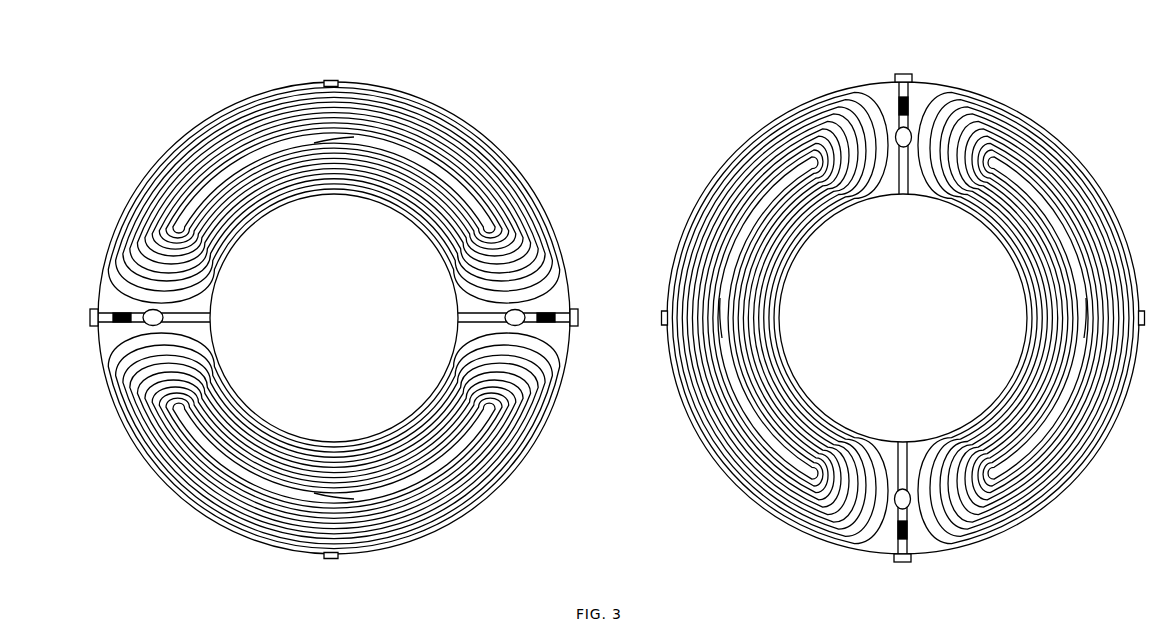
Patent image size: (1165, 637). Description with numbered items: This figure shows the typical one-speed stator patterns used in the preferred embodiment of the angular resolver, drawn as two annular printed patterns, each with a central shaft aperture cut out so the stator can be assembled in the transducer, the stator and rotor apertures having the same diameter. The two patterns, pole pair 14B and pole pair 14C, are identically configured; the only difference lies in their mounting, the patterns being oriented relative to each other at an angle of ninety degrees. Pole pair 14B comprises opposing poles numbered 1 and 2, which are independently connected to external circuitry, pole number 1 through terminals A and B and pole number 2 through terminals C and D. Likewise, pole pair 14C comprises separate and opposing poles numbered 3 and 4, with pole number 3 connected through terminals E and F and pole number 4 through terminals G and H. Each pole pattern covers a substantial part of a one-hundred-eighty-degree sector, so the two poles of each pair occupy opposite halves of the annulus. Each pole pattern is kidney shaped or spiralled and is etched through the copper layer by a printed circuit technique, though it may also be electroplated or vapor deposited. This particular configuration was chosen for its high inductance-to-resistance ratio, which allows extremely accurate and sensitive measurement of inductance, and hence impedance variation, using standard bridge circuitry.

The pole pair 14B is at (382, 40).
The pole pair 14C is at (952, 40).
The pole number 1 is at (333, 195).
The pole number 2 is at (333, 446).
The pole number 3 is at (778, 317).
The pole number 4 is at (1026, 325).
The terminal A is at (378, 112).
The terminal B is at (354, 73).
The terminal C is at (252, 518).
The terminal D is at (308, 568).
The terminal E is at (683, 366).
The terminal F is at (649, 329).
The terminal G is at (1119, 288).
The terminal H is at (1148, 331).